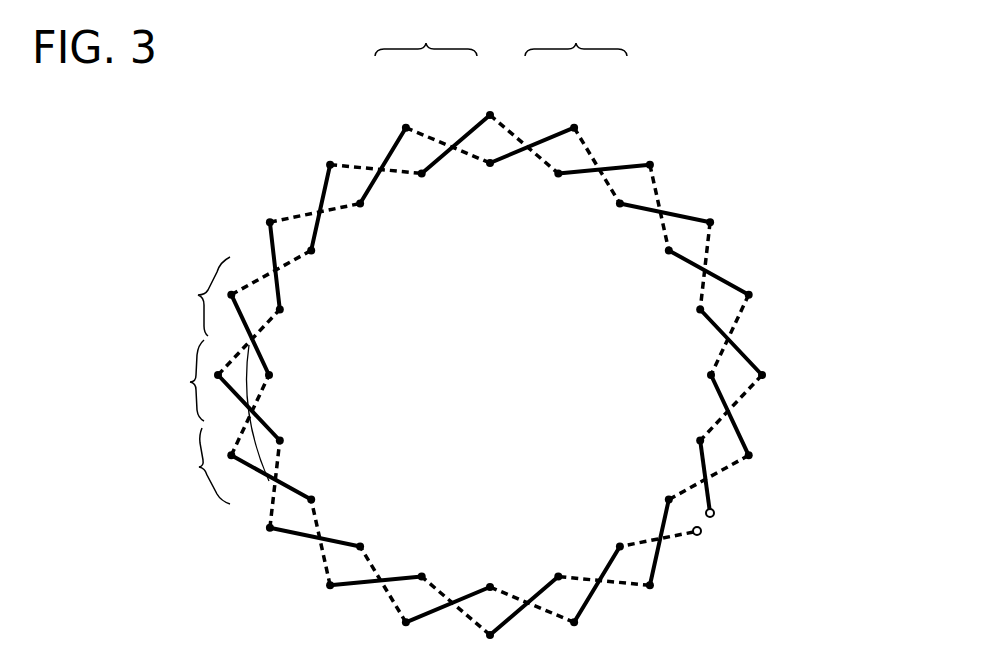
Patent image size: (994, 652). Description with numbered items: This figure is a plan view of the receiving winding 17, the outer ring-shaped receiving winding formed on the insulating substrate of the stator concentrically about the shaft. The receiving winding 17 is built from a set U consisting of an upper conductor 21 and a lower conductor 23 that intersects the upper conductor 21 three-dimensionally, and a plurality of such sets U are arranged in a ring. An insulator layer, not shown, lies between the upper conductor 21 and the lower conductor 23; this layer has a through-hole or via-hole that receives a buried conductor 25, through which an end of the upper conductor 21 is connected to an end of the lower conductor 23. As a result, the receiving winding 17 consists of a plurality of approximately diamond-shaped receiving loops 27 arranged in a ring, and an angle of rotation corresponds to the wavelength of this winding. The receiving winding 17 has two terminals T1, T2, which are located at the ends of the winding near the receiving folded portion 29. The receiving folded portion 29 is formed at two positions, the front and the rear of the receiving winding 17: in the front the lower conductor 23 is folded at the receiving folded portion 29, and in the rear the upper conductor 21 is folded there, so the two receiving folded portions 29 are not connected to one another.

The receiving winding 17 is at (818, 77).
The upper conductor 21 is at (468, 130).
The lower conductor 23 is at (427, 136).
The buried conductor 25 is at (490, 112).
The receiving loop 27 is at (194, 380).
The receiving folded portion 29 is at (668, 543).
The terminal T1 is at (701, 533).
The terminal T2 is at (714, 514).
The set U is at (501, 36).